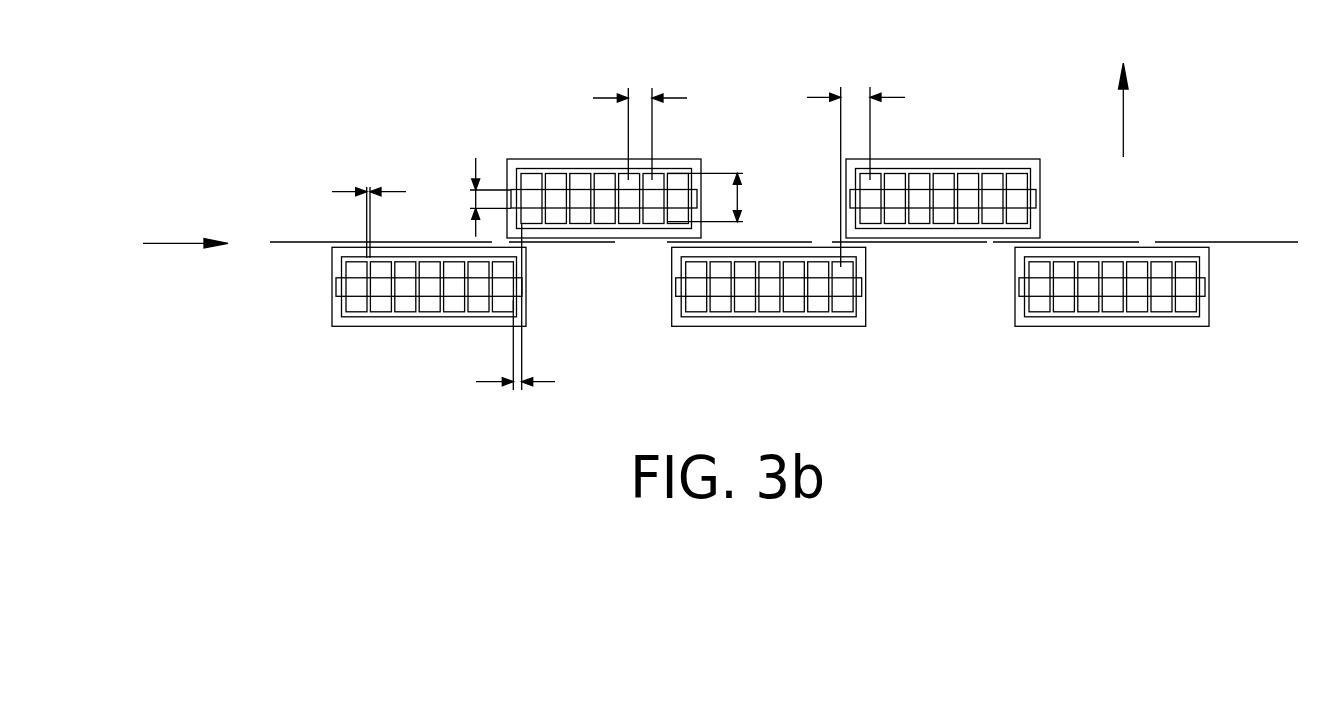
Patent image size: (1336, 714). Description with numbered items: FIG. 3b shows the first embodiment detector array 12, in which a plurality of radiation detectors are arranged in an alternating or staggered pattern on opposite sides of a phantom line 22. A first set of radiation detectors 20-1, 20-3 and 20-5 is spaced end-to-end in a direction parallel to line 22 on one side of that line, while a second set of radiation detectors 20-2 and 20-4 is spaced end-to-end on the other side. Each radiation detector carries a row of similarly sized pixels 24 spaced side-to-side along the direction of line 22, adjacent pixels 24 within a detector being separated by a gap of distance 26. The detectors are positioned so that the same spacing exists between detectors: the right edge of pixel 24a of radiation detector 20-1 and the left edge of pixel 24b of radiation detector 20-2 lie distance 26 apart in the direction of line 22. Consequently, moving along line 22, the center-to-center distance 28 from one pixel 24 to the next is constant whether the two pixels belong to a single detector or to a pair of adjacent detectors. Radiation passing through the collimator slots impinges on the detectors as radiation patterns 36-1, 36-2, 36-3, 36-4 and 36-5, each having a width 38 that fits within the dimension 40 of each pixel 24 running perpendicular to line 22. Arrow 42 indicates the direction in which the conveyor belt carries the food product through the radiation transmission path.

The detector array 12 is at (172, 243).
The radiation detector 20-1 is at (348, 327).
The radiation detector 20-2 is at (577, 159).
The radiation detector 20-3 is at (823, 327).
The radiation detector 20-4 is at (961, 158).
The radiation detector 20-5 is at (1112, 326).
The line 22 is at (1247, 241).
The pixels 24 is at (435, 312).
The pixel 24a is at (500, 303).
The pixel 24b is at (532, 180).
The gap distance 26 is at (338, 192).
The center-to-center distance 28 is at (640, 89).
The radiation pattern 36-1 is at (336, 297).
The radiation pattern 36-2 is at (510, 187).
The radiation pattern 36-3 is at (864, 286).
The radiation pattern 36-4 is at (1040, 197).
The radiation pattern 36-5 is at (1205, 286).
The width 38 is at (473, 198).
The pixel dimension 40 is at (742, 186).
The arrow 42 is at (1123, 128).